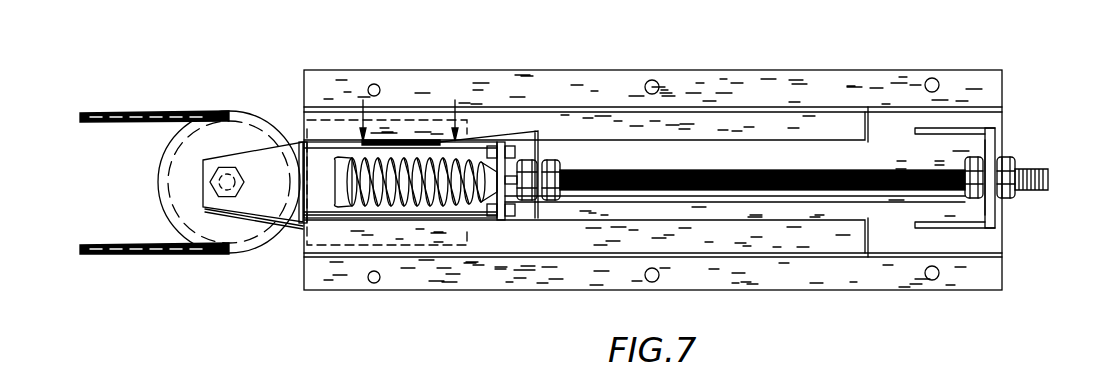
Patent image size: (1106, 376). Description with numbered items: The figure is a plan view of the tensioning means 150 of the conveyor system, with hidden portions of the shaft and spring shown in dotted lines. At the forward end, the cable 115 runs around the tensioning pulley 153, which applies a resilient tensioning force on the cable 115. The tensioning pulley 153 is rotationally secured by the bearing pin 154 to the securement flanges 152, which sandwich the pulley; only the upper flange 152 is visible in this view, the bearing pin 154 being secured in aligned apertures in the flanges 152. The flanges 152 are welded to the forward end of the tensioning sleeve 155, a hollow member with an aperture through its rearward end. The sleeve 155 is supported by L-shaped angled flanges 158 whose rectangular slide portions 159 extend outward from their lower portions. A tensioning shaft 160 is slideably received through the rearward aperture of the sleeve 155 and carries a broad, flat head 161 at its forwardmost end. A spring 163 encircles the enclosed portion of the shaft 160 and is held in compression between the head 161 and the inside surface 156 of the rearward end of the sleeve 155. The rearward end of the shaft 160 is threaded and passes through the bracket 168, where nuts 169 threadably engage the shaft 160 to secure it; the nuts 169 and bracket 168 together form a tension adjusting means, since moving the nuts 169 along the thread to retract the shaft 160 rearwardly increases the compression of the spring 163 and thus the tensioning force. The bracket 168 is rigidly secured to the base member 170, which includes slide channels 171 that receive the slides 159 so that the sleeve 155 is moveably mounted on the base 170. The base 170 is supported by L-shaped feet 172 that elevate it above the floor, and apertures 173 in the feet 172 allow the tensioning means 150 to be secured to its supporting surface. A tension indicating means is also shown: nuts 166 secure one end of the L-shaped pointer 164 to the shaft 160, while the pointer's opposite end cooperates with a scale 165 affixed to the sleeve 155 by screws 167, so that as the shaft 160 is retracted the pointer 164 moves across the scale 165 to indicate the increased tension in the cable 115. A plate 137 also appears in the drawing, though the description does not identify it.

The cable 115 is at (125, 113).
The tensioning means 150 is at (384, 40).
The securement flanges 152 is at (260, 212).
The tensioning pulley 153 is at (227, 130).
The bearing pin 154 is at (233, 175).
The tensioning sleeve 155 is at (308, 167).
The inside surface 156 is at (492, 160).
The plate 137 is at (505, 198).
The L-shaped angled flanges 158 is at (322, 152).
The slide portions 159 is at (468, 122).
The tensioning shaft 160 is at (605, 170).
The head 161 is at (343, 183).
The spring 163 is at (392, 172).
The pointer 164 is at (540, 143).
The scale 165 is at (367, 138).
The nuts 166 is at (520, 167).
The screws 167 is at (443, 140).
The bracket 168 is at (990, 143).
The nuts 169 is at (1010, 158).
The base member 170 is at (1003, 118).
The slide channels 171 is at (768, 228).
The feet 172 is at (995, 88).
The apertures 173 is at (380, 87).